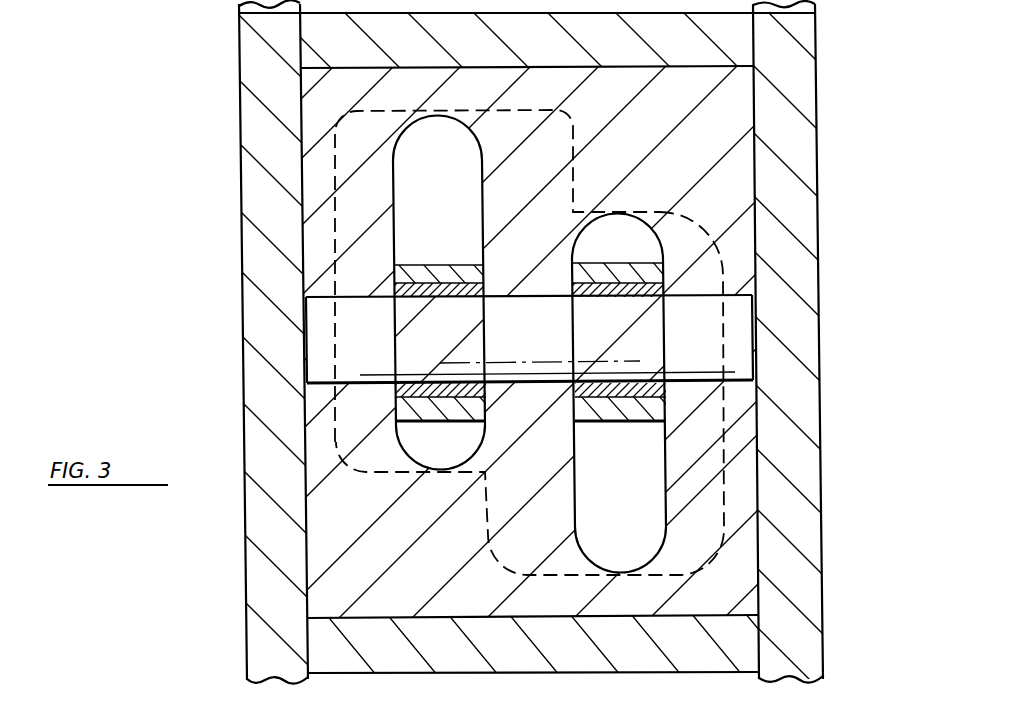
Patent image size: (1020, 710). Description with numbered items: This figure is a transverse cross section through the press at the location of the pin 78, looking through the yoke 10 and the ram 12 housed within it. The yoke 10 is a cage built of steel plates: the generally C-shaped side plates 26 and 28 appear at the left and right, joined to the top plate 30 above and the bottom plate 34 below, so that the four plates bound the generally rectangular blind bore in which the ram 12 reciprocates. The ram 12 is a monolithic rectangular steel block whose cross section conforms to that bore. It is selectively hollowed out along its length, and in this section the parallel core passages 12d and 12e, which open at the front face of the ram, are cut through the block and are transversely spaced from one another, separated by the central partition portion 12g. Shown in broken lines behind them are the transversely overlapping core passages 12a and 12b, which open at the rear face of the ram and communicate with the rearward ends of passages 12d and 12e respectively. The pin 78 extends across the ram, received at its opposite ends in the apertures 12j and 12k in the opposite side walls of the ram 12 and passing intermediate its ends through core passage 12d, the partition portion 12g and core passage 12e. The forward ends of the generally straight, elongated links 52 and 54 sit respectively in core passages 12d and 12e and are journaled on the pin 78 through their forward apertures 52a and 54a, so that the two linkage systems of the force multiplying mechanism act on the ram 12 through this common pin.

The yoke 10 is at (239, 62).
The ram 12 is at (352, 532).
The core passage 12a is at (560, 104).
The core passage 12b is at (666, 210).
The core passage 12d is at (478, 157).
The core passage 12e is at (665, 490).
The central partition portion 12g is at (549, 440).
The aperture 12j is at (314, 299).
The aperture 12k is at (731, 297).
The side plate 26 is at (262, 138).
The side plate 28 is at (808, 91).
The top plate 30 is at (544, 46).
The bottom plate 34 is at (567, 652).
The link 52 is at (471, 423).
The forward aperture 52a is at (437, 291).
The link 54 is at (645, 423).
The forward aperture 54a is at (618, 289).
The pin 78 is at (756, 347).